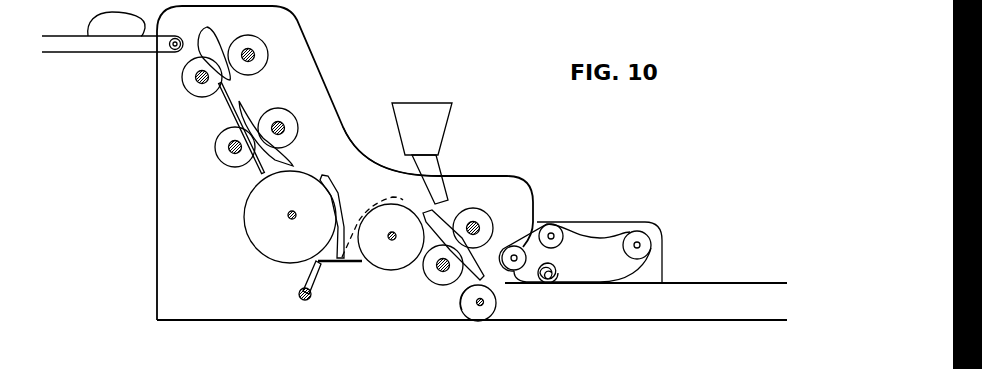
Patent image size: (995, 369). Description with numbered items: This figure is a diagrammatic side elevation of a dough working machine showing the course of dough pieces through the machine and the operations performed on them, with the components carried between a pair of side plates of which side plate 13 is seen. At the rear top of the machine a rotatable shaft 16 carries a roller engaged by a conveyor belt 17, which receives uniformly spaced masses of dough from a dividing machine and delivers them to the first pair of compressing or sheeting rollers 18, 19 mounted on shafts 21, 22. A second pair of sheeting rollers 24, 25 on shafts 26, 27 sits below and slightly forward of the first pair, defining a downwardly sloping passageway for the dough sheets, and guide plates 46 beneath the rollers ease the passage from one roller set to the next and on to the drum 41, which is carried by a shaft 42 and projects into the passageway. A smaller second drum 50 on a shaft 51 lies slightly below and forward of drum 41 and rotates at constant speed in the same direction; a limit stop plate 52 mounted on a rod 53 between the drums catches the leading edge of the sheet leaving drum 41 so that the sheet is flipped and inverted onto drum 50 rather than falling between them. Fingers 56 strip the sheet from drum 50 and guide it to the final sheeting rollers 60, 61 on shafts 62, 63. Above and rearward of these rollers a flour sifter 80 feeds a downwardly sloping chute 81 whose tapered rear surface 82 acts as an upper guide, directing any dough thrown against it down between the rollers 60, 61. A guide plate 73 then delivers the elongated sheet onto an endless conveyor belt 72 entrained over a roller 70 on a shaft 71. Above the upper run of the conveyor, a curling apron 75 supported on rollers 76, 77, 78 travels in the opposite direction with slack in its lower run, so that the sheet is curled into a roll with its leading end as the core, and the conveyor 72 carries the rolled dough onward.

The side plate 13 is at (312, 43).
The rotatable shaft 16 is at (171, 50).
The conveyor belt 17 is at (123, 53).
The sheeting roller 18 is at (183, 85).
The sheeting roller 19 is at (256, 33).
The shaft 21 is at (206, 84).
The shaft 22 is at (255, 57).
The sheeting roller 24 is at (223, 160).
The sheeting roller 25 is at (298, 119).
The shaft 26 is at (236, 156).
The shaft 27 is at (284, 130).
The drum 41 is at (287, 265).
The shaft 42 is at (293, 222).
The guide plates 46 is at (228, 110).
The second drum 50 is at (382, 270).
The shaft 51 is at (394, 239).
The limit stop plate 52 is at (323, 265).
The rod 53 is at (311, 299).
The fingers 56 is at (433, 240).
The sheeting roller 60 is at (437, 284).
The sheeting roller 61 is at (492, 222).
The shaft 62 is at (446, 271).
The shaft 63 is at (473, 222).
The roller 70 is at (491, 313).
The shaft 71 is at (482, 306).
The conveyor belt 72 is at (690, 283).
The guide plate 73 is at (472, 318).
The curling apron 75 is at (603, 236).
The roller 76 is at (527, 245).
The roller 77 is at (570, 233).
The roller 78 is at (645, 238).
The flour sifter 80 is at (452, 117).
The chute 81 is at (441, 168).
The rear surface 82 is at (425, 172).